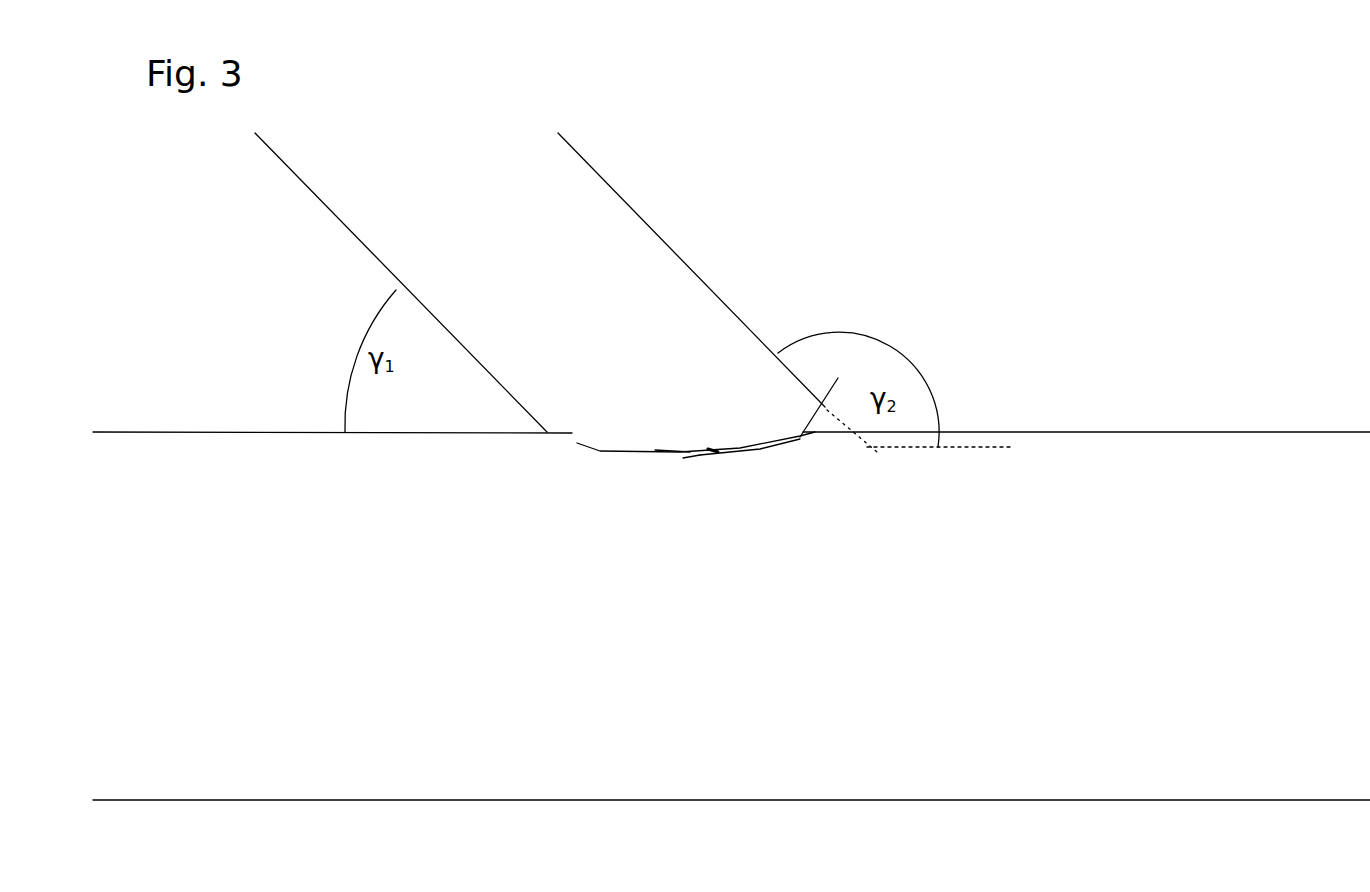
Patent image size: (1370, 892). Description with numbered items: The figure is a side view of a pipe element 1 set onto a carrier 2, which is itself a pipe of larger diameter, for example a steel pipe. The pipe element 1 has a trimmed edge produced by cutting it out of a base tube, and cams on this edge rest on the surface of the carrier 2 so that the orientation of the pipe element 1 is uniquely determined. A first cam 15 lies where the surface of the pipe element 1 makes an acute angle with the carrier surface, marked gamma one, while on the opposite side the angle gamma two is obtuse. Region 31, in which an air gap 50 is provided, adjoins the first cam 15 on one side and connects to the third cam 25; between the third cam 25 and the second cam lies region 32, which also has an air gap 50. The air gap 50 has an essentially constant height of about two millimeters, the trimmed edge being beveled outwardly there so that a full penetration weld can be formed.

The pipe element 1 is at (682, 287).
The carrier 2 is at (1080, 470).
The first cam 15 is at (577, 443).
The third cam 25 is at (722, 453).
The region 31 is at (670, 450).
The region 32 is at (838, 390).
The air gap 50 is at (683, 458).